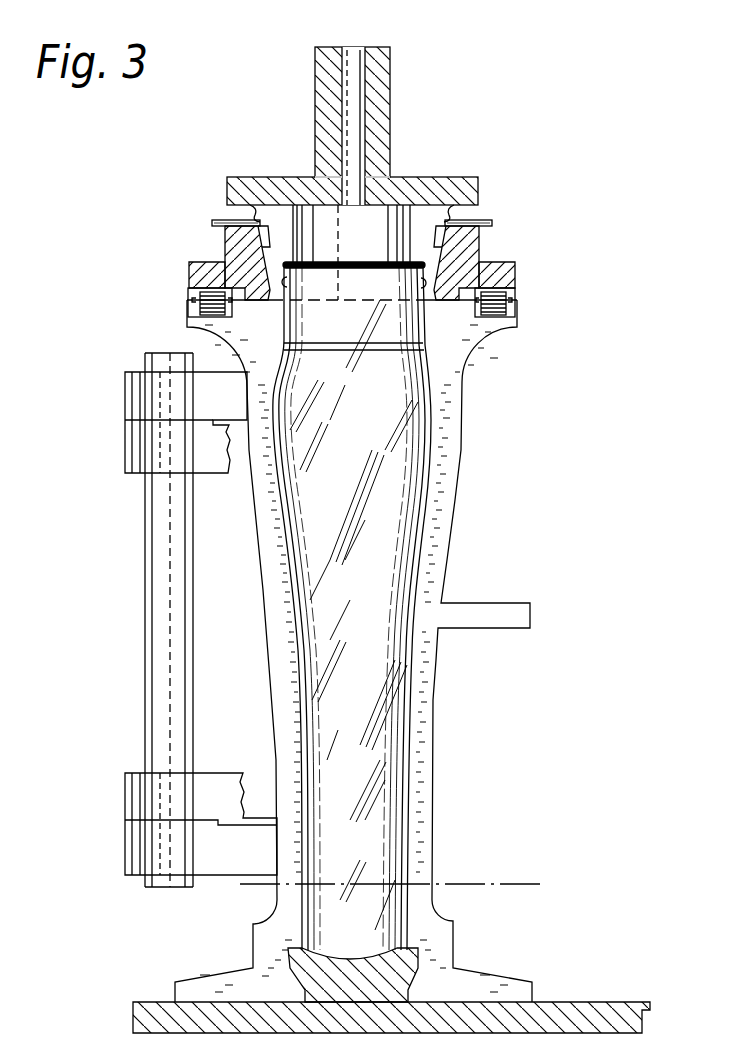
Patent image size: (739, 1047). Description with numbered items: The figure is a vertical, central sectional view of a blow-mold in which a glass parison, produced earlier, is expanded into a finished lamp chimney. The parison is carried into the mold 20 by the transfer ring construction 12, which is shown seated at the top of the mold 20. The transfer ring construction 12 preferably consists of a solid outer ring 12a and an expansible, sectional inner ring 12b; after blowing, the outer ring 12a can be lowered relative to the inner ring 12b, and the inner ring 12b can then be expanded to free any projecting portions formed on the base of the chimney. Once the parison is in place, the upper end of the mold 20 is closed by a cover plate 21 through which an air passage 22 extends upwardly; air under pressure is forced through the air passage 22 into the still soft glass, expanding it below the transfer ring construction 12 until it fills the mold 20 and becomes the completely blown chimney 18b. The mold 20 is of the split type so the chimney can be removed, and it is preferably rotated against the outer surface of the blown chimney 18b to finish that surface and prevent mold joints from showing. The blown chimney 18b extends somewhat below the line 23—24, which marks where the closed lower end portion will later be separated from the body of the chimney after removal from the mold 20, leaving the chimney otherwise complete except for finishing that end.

The transfer ring construction 12 is at (399, 252).
The solid outer ring 12a is at (493, 272).
The expansible and sectional inner ring 12b is at (443, 257).
The completely blown chimney 18b is at (388, 760).
The mold 20 is at (453, 405).
The cover plate 21 is at (425, 187).
The air passage 22 is at (350, 125).
The line 23—24 (separation line end) 23 is at (297, 885).
The line 23—24 (separation line end) 24 is at (480, 885).